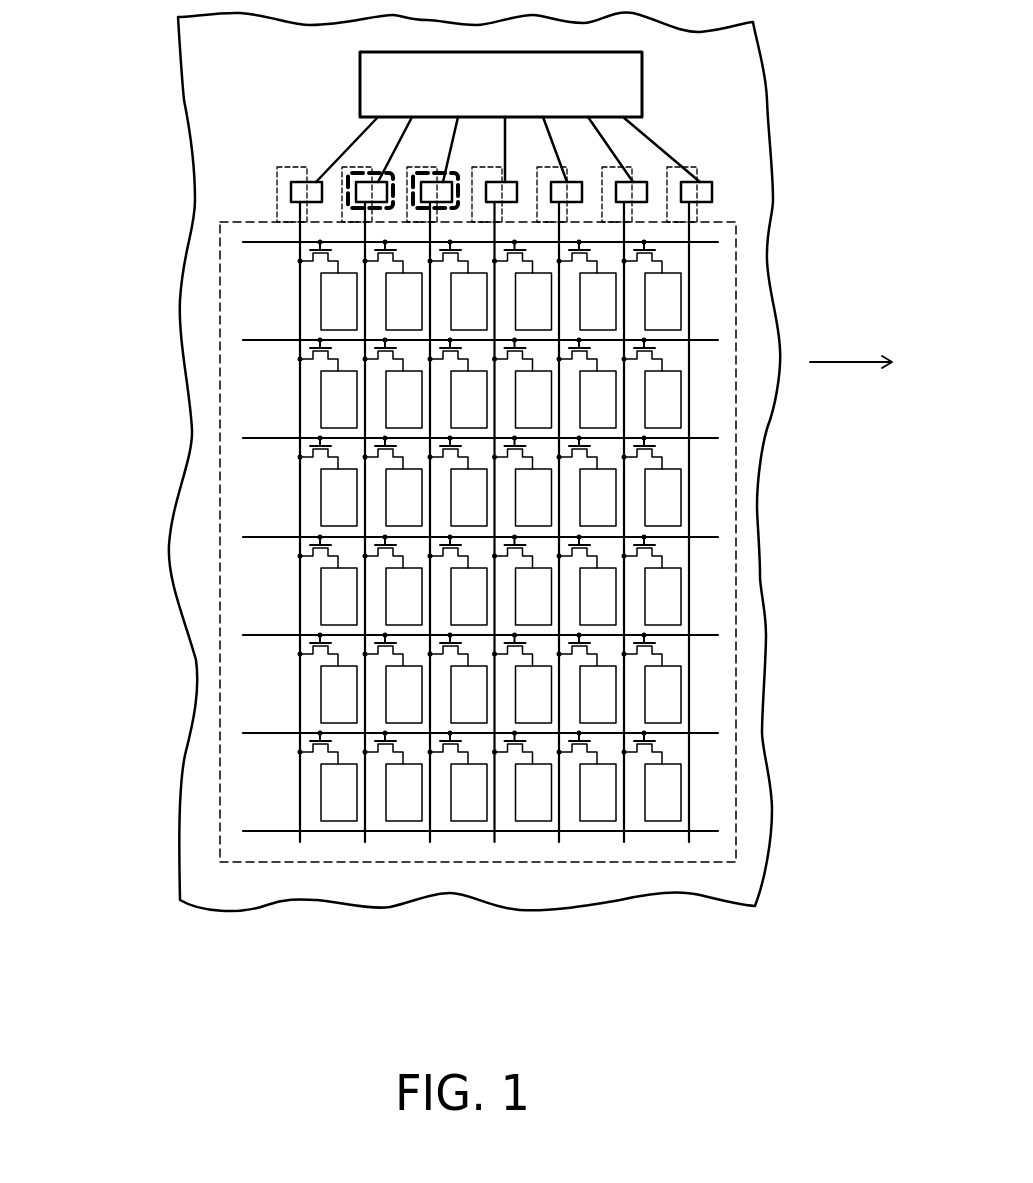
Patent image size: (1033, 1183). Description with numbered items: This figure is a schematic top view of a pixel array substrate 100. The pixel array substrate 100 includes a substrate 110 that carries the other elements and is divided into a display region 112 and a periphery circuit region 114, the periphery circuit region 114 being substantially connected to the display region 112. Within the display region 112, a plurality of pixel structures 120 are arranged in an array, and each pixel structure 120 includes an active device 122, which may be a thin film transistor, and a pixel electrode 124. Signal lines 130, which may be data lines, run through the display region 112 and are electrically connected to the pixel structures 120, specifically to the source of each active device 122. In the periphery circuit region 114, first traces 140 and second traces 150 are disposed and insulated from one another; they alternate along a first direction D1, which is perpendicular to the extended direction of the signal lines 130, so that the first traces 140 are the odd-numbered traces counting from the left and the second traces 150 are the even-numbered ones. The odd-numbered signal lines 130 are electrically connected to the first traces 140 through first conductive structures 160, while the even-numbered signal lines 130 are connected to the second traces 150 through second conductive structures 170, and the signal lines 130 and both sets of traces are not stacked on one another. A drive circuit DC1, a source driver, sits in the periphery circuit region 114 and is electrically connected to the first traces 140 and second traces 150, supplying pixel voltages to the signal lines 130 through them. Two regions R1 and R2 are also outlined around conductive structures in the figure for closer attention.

The pixel array substrate 100 is at (462, 501).
The substrate 110 is at (85, 23).
The display region 112 is at (283, 167).
The periphery circuit region 114 is at (237, 52).
The pixel structure 120 is at (195, 305).
The active device 122 is at (298, 254).
The pixel electrode 124 is at (337, 303).
The signal line 130 is at (300, 402).
The first trace 140 is at (563, 150).
The second trace 150 is at (627, 163).
The first conductive structure 160 is at (573, 203).
The second conductive structure 170 is at (640, 199).
The drive circuit DC1 is at (622, 83).
The first region R1 is at (413, 210).
The second region R2 is at (348, 205).
The first direction D1 is at (851, 342).